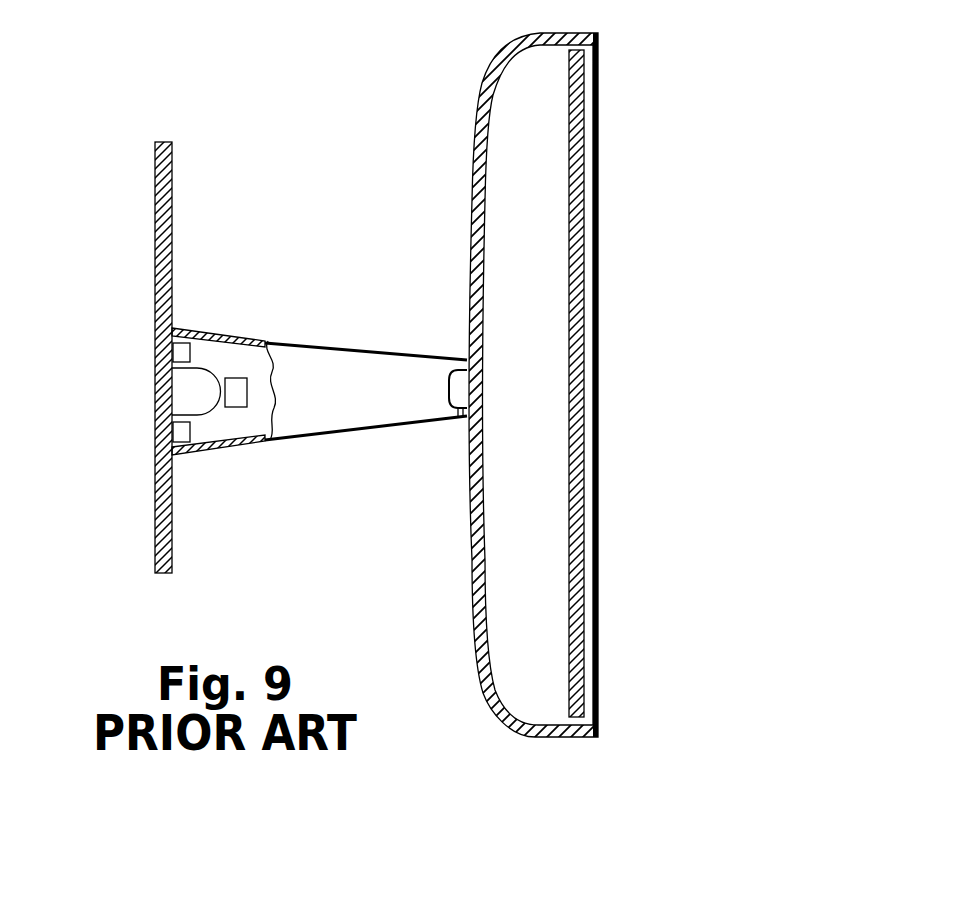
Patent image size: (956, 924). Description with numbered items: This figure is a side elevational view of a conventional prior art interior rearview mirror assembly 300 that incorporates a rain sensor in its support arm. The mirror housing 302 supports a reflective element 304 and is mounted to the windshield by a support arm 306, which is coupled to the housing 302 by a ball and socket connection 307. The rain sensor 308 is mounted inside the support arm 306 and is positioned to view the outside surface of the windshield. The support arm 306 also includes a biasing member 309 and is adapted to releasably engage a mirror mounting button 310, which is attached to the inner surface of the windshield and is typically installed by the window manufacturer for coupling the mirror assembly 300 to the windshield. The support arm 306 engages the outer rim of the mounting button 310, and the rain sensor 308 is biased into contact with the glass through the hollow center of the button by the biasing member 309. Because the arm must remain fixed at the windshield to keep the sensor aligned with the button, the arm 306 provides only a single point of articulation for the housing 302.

The interior rearview mirror assembly 300 is at (367, 222).
The mirror housing 302 is at (507, 50).
The reflective element 304 is at (584, 367).
The support arm 306 is at (327, 436).
The ball and socket connection 307 is at (458, 414).
The rain sensor 308 is at (170, 455).
The biasing member 309 is at (237, 378).
The mirror mounting button 310 is at (170, 330).